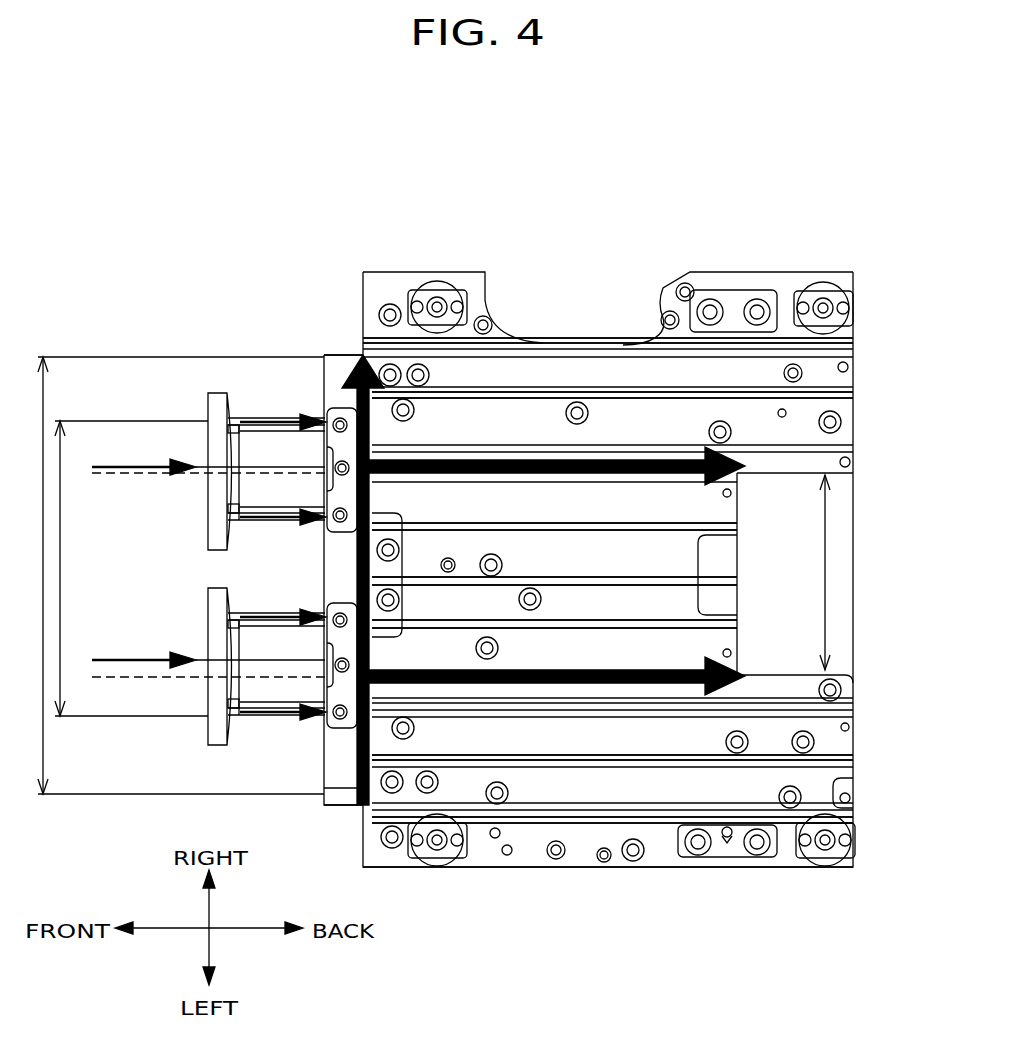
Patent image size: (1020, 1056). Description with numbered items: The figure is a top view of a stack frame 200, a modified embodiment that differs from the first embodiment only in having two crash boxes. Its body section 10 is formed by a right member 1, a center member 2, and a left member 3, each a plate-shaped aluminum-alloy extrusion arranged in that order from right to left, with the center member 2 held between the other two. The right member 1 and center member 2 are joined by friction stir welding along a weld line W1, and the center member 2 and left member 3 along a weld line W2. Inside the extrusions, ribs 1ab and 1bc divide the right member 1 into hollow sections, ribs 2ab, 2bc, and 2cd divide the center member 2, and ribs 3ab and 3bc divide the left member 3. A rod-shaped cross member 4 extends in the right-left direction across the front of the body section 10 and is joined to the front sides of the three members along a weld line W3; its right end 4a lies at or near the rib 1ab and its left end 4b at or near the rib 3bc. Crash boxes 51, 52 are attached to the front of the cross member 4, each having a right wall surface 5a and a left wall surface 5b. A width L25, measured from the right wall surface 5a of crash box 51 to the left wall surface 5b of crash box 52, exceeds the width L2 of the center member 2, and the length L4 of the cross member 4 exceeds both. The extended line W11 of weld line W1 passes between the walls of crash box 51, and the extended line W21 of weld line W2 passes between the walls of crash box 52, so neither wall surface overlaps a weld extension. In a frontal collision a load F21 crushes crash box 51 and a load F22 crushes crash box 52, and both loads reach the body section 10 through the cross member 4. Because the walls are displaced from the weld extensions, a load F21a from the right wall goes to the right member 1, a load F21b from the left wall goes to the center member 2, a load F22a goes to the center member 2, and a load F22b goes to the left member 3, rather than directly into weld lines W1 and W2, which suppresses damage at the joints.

The stack frame 200 is at (742, 158).
The body section 10 is at (745, 272).
The right member 1 is at (856, 372).
The rib 1ab is at (856, 345).
The rib 1bc is at (856, 393).
The center member 2 is at (737, 556).
The rib 2ab is at (737, 522).
The rib 2bc is at (737, 580).
The rib 2cd is at (737, 627).
The left member 3 is at (856, 785).
The rib 3ab is at (856, 757).
The rib 3bc is at (856, 800).
The cross member 4 is at (326, 371).
The right end 4a is at (345, 352).
The left end 4b is at (345, 808).
The right wall surface 5a is at (234, 416).
The left wall surface 5b is at (253, 528).
The crash box 51 is at (220, 505).
The crash box 52 is at (220, 697).
The weld line W1 is at (617, 455).
The weld line W2 is at (578, 686).
The weld line W3 is at (356, 795).
The extended line W11 is at (208, 486).
The extended line W21 is at (206, 694).
The load F21 is at (208, 458).
The load F21a is at (283, 406).
The load F21b is at (283, 534).
The load F22 is at (208, 650).
The load F22a is at (283, 605).
The load F22b is at (283, 724).
The width L2 is at (840, 572).
The length L4 is at (172, 575).
The width L25 is at (131, 568).